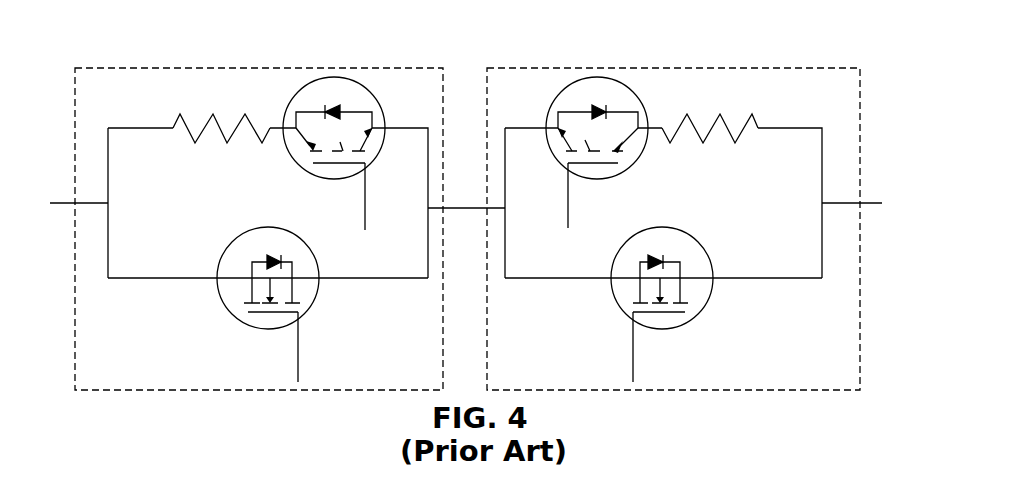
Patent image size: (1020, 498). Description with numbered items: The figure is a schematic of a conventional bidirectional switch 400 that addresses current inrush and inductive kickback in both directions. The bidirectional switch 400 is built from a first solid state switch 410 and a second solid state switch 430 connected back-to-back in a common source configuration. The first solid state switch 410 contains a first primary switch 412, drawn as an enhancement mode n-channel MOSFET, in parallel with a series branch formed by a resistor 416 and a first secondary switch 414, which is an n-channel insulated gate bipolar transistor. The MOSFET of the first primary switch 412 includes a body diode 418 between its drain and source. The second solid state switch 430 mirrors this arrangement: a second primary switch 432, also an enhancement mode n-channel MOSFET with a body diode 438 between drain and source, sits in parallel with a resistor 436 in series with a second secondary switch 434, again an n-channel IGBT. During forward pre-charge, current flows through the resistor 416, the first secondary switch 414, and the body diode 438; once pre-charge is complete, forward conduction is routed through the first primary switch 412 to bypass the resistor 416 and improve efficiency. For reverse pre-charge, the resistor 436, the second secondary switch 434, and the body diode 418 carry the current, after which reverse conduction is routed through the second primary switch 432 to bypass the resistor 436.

The bidirectional switch 400 is at (825, 47).
The first solid state switch 410 is at (122, 67).
The first primary switch 412 is at (284, 277).
The first secondary switch 414 is at (298, 163).
The resistor 416 is at (178, 117).
The body diode 418 is at (274, 258).
The second solid state switch 430 is at (633, 67).
The second primary switch 432 is at (644, 275).
The second secondary switch 434 is at (641, 160).
The resistor 436 is at (730, 125).
The body diode 438 is at (655, 256).